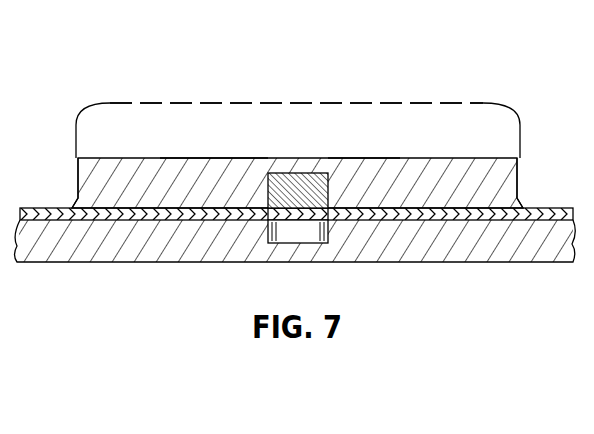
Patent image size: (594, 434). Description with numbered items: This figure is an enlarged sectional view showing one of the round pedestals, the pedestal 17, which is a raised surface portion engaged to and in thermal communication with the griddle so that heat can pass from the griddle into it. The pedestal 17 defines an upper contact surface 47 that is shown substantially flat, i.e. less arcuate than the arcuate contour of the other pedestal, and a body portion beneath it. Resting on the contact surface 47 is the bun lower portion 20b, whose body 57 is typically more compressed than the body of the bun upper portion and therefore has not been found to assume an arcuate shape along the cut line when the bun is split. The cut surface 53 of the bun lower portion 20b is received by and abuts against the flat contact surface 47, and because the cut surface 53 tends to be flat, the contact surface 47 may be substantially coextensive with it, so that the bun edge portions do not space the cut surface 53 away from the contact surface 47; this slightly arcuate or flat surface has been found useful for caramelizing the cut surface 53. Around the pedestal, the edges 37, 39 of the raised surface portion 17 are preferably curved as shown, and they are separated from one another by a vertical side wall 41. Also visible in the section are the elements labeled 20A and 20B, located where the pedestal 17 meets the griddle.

The pedestal 17 is at (216, 152).
The first connector block 20A is at (288, 182).
The recess / second connector 20B is at (285, 244).
The bun lower portion 20b is at (281, 103).
The edge 37 is at (519, 158).
The edge 39 is at (524, 208).
The vertical side wall 41 is at (77, 186).
The upper contact surface 47 is at (160, 158).
The cut surface 53 is at (323, 158).
The body 57 is at (438, 110).